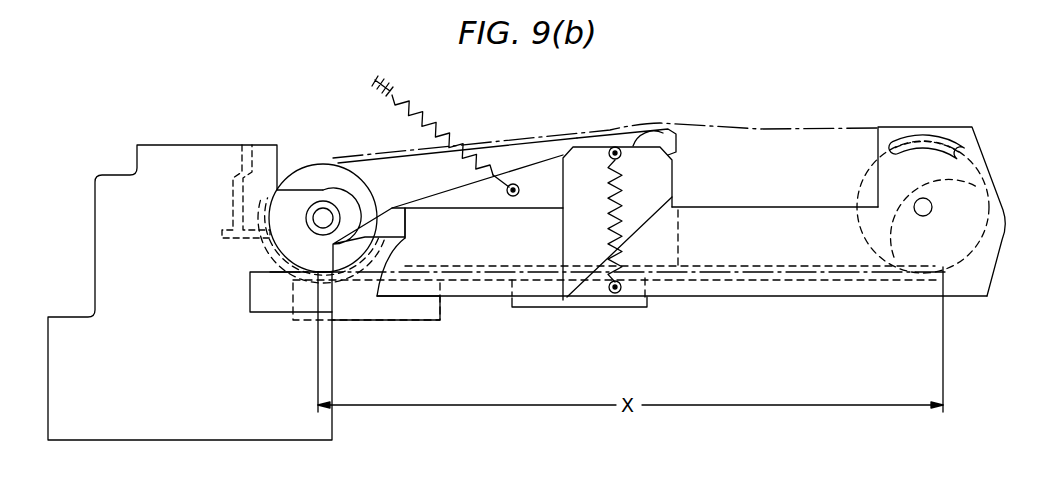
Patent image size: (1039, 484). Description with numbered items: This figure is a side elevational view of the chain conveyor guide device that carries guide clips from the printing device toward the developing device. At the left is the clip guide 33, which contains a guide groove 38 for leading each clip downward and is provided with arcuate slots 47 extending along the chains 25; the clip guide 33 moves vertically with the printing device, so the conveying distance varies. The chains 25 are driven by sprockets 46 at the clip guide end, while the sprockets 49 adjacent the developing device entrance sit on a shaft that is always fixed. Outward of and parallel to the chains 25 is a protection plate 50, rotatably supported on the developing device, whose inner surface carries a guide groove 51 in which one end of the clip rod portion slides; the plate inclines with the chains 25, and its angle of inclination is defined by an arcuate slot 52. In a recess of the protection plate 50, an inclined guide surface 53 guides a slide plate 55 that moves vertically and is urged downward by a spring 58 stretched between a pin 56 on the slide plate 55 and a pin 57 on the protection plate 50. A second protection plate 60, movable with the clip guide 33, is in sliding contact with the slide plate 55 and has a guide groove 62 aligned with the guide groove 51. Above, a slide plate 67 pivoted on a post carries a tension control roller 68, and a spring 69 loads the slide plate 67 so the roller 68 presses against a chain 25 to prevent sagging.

The clip guide 33 is at (186, 143).
The guide groove 38 is at (235, 186).
The sprocket 46 is at (336, 176).
The arcuate slot 47 is at (262, 250).
The spring 69 is at (453, 132).
The slide plate 67 is at (522, 172).
The chain 25 is at (762, 127).
The pin 56 is at (608, 146).
The tension control roller 68 is at (674, 136).
The slide plate 55 is at (676, 176).
The inclined guide surface 53 is at (656, 226).
The spring 58 is at (608, 212).
The guide groove 62 is at (463, 266).
The protection plate 60 is at (490, 298).
The protection plate 50 is at (816, 297).
The pin 57 is at (628, 298).
The guide groove 51 is at (872, 282).
The sprocket 49 is at (992, 170).
The arcuate slot 52 is at (956, 142).